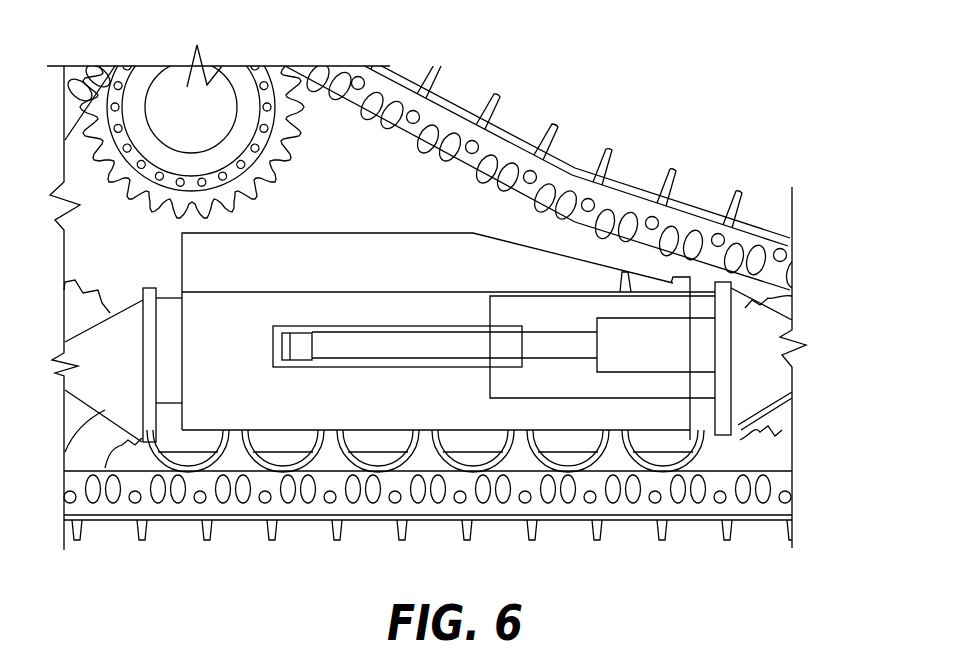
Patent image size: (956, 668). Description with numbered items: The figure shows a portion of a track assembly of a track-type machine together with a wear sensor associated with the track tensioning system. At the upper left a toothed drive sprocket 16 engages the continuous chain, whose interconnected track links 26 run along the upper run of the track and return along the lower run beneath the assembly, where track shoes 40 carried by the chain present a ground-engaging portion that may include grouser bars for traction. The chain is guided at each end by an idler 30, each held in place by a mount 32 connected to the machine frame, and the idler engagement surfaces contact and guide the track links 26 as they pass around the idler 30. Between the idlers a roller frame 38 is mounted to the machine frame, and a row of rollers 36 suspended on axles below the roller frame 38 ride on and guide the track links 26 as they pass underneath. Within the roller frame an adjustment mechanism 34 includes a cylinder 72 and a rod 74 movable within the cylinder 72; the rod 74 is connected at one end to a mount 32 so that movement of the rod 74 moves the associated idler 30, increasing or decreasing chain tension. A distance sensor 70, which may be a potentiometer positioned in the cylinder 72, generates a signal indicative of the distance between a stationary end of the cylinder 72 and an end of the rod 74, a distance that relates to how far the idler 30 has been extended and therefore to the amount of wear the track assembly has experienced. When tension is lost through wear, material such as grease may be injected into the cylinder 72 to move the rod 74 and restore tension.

The drive sprocket 16 is at (279, 142).
The track links 26 is at (106, 520).
The idler 30 is at (84, 292).
The mount 32 is at (100, 330).
The adjustment mechanism 34 is at (608, 318).
The rollers 36 is at (228, 430).
The roller frame 38 is at (222, 329).
The track shoes 40 is at (205, 522).
The distance sensor 70 is at (286, 357).
The cylinder 72 is at (283, 326).
The rod 74 is at (337, 346).